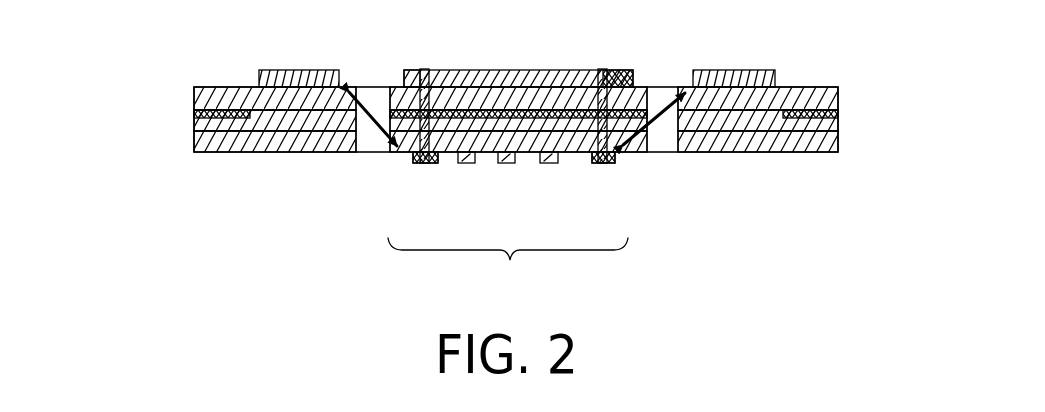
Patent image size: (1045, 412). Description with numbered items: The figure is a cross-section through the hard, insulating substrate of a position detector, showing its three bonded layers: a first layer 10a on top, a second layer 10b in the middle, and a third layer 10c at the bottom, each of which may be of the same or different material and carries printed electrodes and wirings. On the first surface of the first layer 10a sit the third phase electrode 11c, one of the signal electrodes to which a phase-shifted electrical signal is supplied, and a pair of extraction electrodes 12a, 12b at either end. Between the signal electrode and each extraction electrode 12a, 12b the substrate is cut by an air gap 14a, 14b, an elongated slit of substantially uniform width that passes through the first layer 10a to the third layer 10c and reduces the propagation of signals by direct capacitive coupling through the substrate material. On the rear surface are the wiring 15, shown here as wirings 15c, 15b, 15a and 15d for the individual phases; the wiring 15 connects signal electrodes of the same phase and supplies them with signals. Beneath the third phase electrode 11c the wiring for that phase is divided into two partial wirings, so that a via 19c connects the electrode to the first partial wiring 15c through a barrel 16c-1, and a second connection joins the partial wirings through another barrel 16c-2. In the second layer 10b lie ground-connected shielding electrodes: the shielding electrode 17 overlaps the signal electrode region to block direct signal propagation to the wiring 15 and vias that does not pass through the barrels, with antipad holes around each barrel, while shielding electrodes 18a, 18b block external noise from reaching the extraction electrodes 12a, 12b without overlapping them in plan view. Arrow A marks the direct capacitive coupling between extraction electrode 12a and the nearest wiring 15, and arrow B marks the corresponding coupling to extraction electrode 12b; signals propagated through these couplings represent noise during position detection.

The first layer 10a is at (808, 97).
The second layer 10b is at (830, 125).
The third layer 10c is at (827, 148).
The third phase electrode 11c is at (594, 69).
The extraction electrode 12a is at (750, 68).
The extraction electrode 12b is at (310, 68).
The air gap 14a is at (658, 122).
The air gap 14b is at (357, 170).
The wiring 15 is at (508, 223).
The wiring 15a is at (512, 165).
The wiring 15b is at (470, 165).
The wiring 15c is at (425, 165).
The wiring 15d is at (552, 165).
The barrel 16c-1 is at (587, 69).
The barrel 16c-2 is at (421, 68).
The shielding electrode 17 is at (451, 74).
The shielding electrode 18a is at (840, 115).
The shielding electrode 18b is at (195, 113).
The via 19c is at (508, 195).
The arrow A is at (658, 124).
The arrow B is at (360, 155).